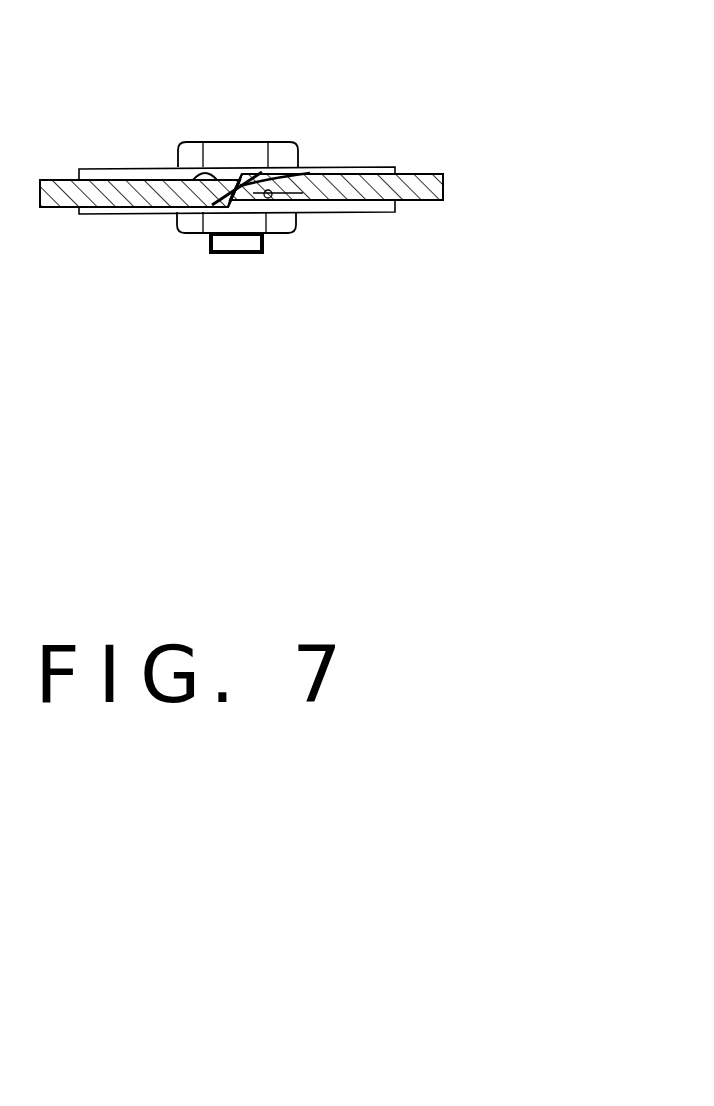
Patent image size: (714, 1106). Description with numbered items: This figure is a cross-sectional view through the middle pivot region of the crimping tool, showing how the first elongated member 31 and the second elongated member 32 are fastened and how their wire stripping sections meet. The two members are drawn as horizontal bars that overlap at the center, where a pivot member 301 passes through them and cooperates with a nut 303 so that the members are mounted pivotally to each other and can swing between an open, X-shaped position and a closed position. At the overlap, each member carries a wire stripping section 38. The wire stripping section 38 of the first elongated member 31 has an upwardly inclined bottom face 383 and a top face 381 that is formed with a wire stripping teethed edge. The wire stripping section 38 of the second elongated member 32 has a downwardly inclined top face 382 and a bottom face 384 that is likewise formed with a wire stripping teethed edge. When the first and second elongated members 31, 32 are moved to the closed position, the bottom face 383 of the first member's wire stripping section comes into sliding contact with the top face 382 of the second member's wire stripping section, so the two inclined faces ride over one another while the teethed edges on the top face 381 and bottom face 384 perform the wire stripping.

The first elongated member 31 is at (423, 172).
The second elongated member 32 is at (53, 210).
The wire stripping section 38 is at (213, 198).
The pivot member 301 is at (187, 141).
The nut 303 is at (195, 233).
The top face 381 is at (242, 185).
The downwardly inclined top face 382 is at (176, 210).
The upwardly inclined bottom face 383 is at (262, 178).
The bottom face 384 is at (242, 253).